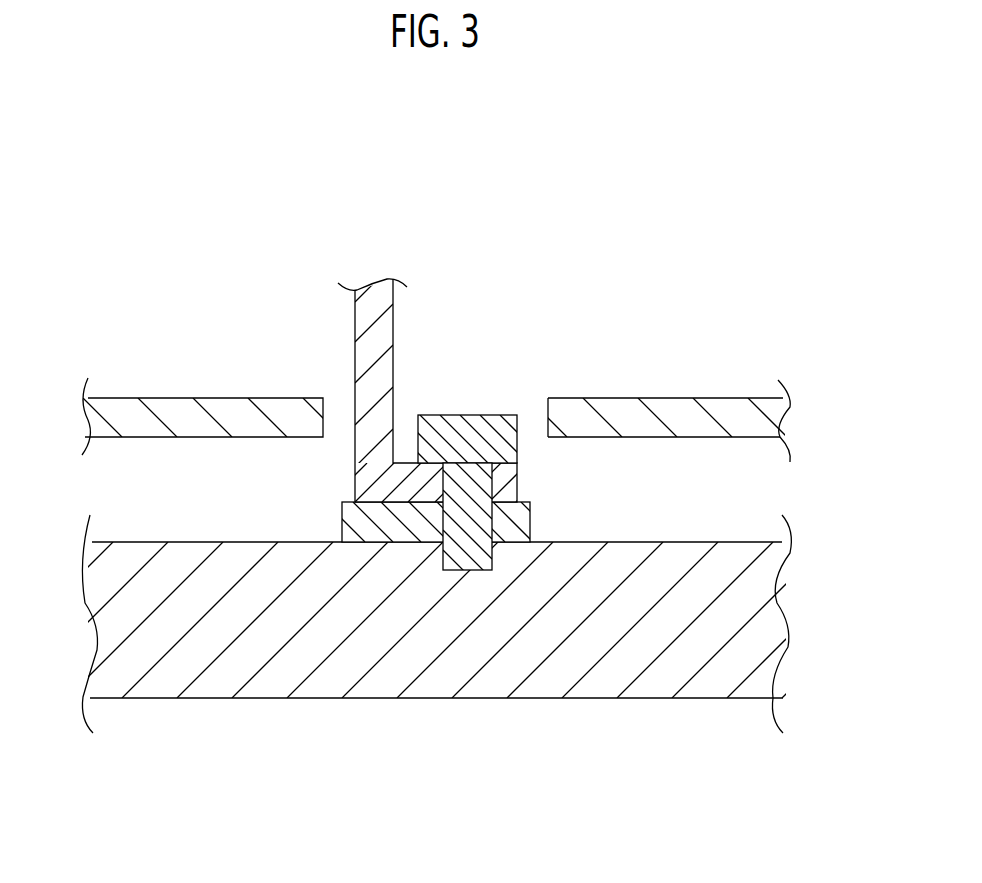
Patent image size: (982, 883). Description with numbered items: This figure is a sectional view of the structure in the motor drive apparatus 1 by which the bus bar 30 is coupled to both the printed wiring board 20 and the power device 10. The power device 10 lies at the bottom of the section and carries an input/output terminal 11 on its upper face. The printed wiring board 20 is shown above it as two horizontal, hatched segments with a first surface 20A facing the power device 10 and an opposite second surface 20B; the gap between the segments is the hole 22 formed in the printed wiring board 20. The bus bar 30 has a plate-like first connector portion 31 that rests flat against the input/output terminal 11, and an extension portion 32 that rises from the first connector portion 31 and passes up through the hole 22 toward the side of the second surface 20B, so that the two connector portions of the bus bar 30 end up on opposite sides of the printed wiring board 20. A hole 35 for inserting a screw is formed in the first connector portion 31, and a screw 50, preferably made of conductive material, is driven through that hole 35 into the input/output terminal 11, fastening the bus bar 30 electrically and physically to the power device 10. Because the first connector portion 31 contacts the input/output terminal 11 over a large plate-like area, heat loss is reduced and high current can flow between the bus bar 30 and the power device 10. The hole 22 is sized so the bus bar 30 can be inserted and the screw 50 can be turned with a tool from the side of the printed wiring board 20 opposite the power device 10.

The motor drive apparatus 1 is at (572, 223).
The power device 10 is at (318, 685).
The input/output terminal 11 is at (347, 530).
The printed wiring board 20 is at (436, 372).
The first surface 20A is at (142, 437).
The second surface 20B is at (177, 398).
The hole 22 is at (323, 420).
The bus bar 30 is at (431, 375).
The first connector portion 31 is at (513, 490).
The extension portion 32 is at (388, 338).
The hole for inserting a screw 35 is at (445, 472).
The screw 50 is at (462, 417).